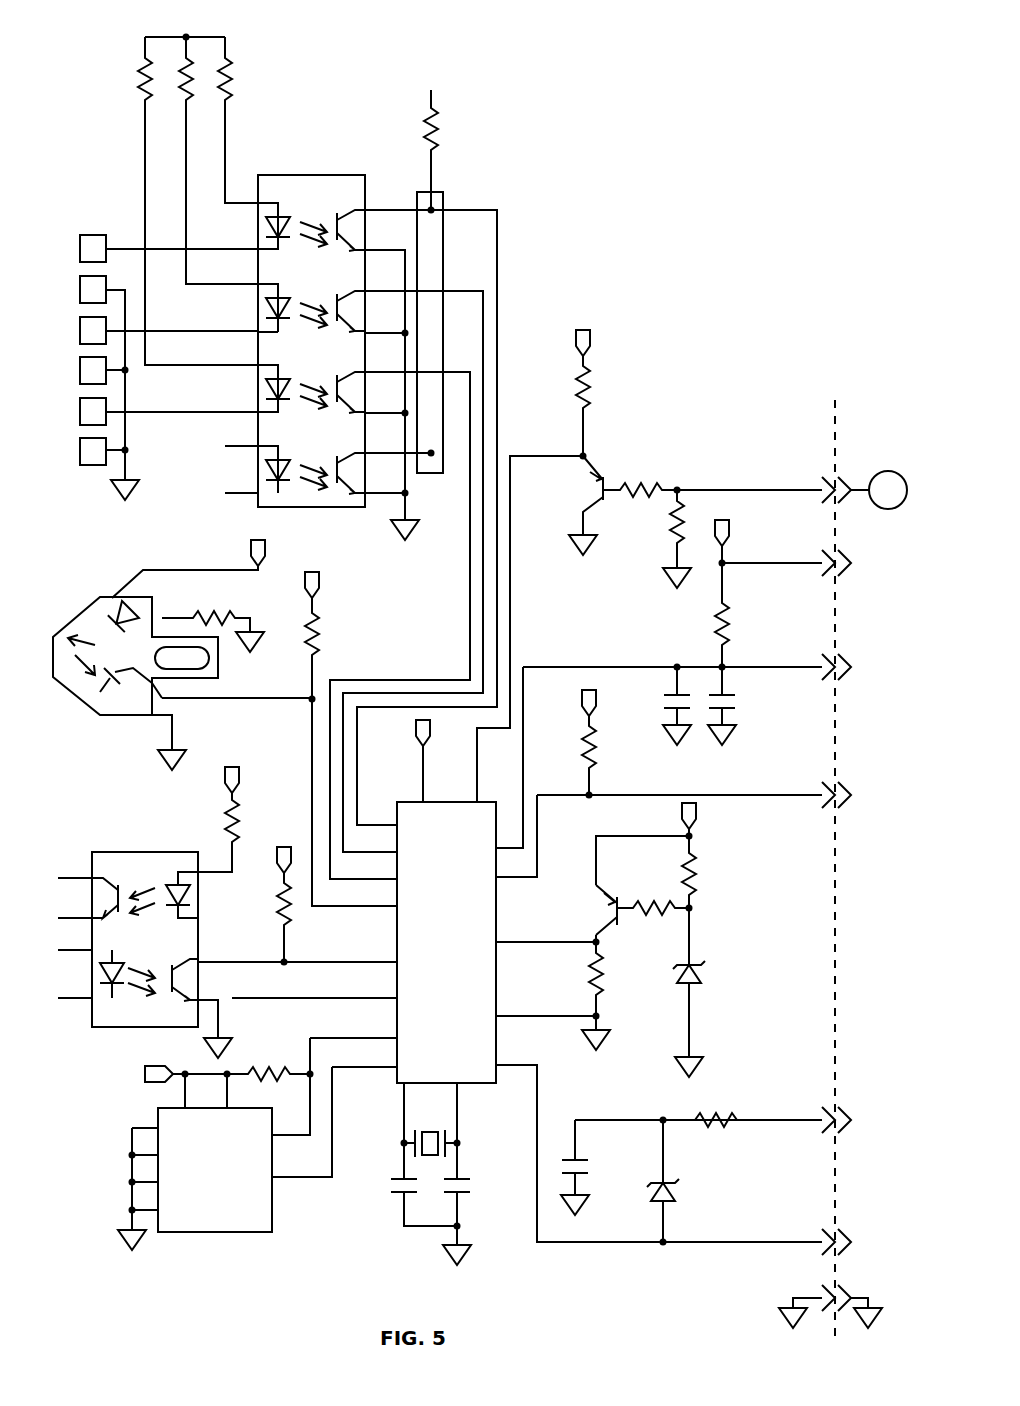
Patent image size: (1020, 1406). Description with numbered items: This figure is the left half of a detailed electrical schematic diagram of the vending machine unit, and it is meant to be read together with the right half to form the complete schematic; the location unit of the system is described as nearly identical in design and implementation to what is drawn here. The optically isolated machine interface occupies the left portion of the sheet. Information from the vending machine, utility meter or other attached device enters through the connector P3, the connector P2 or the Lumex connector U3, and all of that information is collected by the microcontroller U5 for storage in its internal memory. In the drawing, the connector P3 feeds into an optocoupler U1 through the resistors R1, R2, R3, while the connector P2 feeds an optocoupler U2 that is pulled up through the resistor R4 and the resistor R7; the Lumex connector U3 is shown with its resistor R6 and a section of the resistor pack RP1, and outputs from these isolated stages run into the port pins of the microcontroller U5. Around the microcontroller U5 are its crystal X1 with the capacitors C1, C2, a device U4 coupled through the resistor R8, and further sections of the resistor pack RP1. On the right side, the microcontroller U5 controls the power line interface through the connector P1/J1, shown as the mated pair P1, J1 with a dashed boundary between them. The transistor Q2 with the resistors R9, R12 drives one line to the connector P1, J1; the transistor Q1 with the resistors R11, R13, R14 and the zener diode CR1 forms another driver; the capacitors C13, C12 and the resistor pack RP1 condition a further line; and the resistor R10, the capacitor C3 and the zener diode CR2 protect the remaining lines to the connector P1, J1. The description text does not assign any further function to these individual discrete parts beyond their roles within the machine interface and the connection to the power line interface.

The resistor 180 ohm R1 is at (196, 185).
The resistor 180 ohm R2 is at (216, 145).
The resistor 180 ohm R3 is at (257, 104).
The connector P3 is at (79, 333).
The optocoupler PS2501-4NEC U1 is at (250, 330).
The resistor pack 10K RP1 is at (517, 441).
The transistor 2222 Q2 is at (570, 505).
The resistor 10K R9 is at (649, 460).
The resistor 100K R12 is at (653, 539).
The capacitor 33pF C13 is at (648, 705).
The capacitor .01 C12 is at (746, 706).
The connector P1 is at (809, 860).
The connector J1 is at (872, 847).
The microcontroller U5 is at (447, 914).
The transistor 4403 Q1 is at (582, 897).
The resistor 10K R11 is at (661, 883).
The resistor 33K R13 is at (713, 855).
The resistor 40K R14 is at (615, 996).
The zener diode IN5228 CR1 is at (729, 992).
The resistor 10K R10 is at (717, 1120).
The capacitor .1 C3 is at (594, 1167).
The zener diode IN5231 CR2 is at (703, 1181).
The Lumex connector U3 is at (151, 663).
The resistor 47K R6 is at (229, 618).
The resistor 180 R4 is at (212, 819).
The connector P2 is at (68, 908).
The optocoupler PS2501-2NEC U2 is at (143, 951).
The resistor 1K R7 is at (269, 904).
The resistor 22K R8 is at (229, 1052).
The resistor network 24C01 U4 is at (225, 1169).
The crystal 2MHz X1 is at (402, 1131).
The capacitor 33pF C1 is at (397, 1187).
The capacitor 33pF C2 is at (485, 1206).